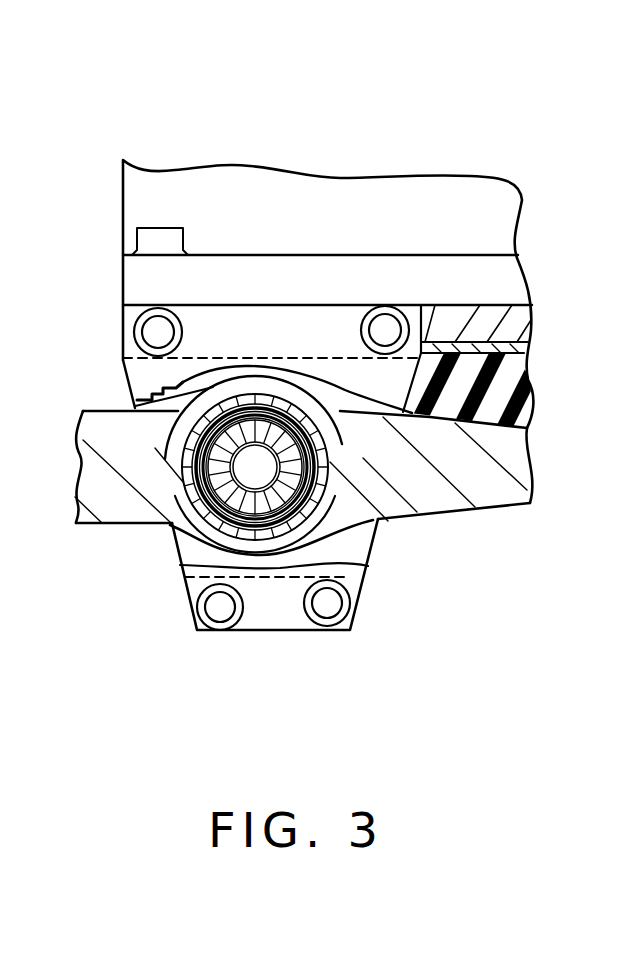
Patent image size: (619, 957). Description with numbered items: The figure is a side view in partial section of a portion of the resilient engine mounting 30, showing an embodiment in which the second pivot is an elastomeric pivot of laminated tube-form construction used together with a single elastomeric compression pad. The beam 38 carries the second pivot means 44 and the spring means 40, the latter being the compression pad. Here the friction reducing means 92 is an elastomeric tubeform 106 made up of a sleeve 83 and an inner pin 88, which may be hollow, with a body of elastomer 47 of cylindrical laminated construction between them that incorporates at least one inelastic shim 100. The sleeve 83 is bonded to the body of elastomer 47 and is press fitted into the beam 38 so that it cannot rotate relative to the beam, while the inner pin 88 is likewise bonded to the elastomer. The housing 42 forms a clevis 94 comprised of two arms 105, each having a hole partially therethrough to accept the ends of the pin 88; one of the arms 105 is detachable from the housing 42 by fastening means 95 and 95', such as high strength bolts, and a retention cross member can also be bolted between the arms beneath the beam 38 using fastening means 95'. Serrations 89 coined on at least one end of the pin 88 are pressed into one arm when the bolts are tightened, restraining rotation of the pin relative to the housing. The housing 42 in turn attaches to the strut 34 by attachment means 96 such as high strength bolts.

The resilient engine mounting 30 is at (300, 679).
The strut 34 is at (367, 201).
The beam 38 is at (486, 479).
The spring means 40 is at (533, 387).
The housing 42 is at (230, 651).
The second pivot means 44 is at (152, 541).
The body of elastomer 47 is at (170, 488).
The sleeve 83 is at (348, 543).
The inner pin 88 is at (252, 398).
The serrations 89 is at (296, 403).
The friction reducing means 92 is at (165, 470).
The clevis 94 is at (357, 576).
The fastening means 95 is at (303, 312).
The fastening means 95' is at (255, 643).
The attachment means 96 is at (185, 242).
The inelastic shim 100 is at (338, 455).
The arms 105 is at (150, 375).
The elastomeric tubeform 106 is at (172, 437).